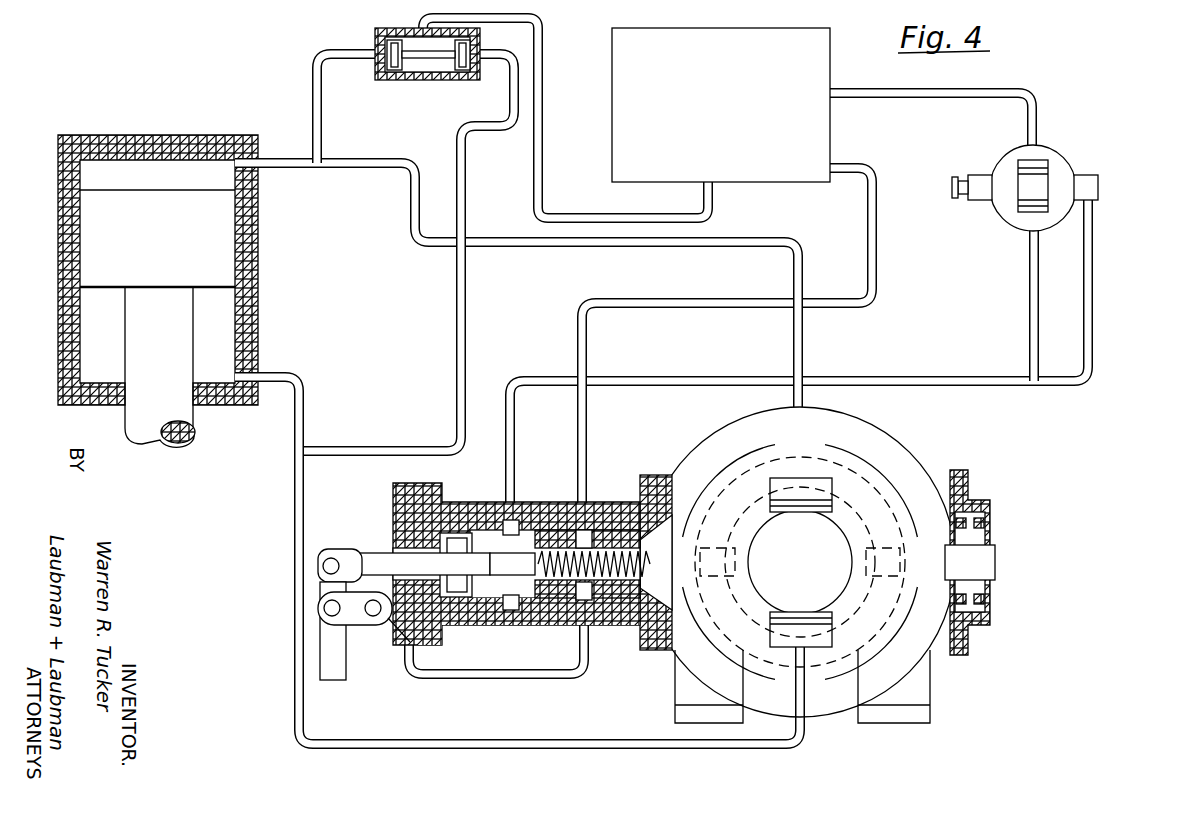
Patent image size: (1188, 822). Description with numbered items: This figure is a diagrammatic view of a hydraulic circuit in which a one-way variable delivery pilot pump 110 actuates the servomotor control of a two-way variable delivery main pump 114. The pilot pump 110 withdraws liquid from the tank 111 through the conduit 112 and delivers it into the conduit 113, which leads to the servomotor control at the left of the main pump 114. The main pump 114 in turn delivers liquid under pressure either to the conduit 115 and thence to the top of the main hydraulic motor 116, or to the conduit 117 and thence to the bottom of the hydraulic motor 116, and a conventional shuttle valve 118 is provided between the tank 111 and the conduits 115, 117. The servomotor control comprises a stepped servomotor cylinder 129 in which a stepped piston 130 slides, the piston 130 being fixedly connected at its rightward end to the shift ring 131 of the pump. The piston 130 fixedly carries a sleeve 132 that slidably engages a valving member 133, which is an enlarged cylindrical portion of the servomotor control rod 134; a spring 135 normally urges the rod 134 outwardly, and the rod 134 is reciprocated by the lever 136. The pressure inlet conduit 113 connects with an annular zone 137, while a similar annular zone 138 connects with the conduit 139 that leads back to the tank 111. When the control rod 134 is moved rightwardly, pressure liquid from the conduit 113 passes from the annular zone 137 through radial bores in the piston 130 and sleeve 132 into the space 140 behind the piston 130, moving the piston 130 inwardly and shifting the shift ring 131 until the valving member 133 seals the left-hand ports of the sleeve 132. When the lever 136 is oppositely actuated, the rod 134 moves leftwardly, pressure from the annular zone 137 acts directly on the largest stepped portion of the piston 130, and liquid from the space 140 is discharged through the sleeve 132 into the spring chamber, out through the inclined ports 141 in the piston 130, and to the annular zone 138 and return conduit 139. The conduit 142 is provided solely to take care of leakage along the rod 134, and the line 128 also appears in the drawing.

The pilot pump 110 is at (1060, 160).
The tank 111 is at (714, 93).
The conduit 112 is at (916, 90).
The conduit 113 is at (1028, 290).
The main pump 114 is at (905, 450).
The conduit 115 is at (805, 343).
The main hydraulic motor 116 is at (260, 280).
The conduit 117 is at (518, 740).
The shuttle valve 118 is at (437, 80).
The conduit 128 is at (1095, 310).
The servomotor cylinder 129 is at (496, 624).
The stepped piston 130 is at (455, 522).
The shift ring 131 is at (842, 482).
The sleeve 132 is at (455, 628).
The valving member 133 is at (531, 567).
The servomotor control rod 134 is at (362, 548).
The spring 135 is at (598, 615).
The lever 136 is at (350, 672).
The annular zone 137 is at (534, 490).
The annular zone 138 is at (595, 503).
The conduit 139 is at (592, 432).
The space 140 is at (460, 505).
The inclined ports 141 is at (580, 602).
The conduit 142 is at (588, 676).